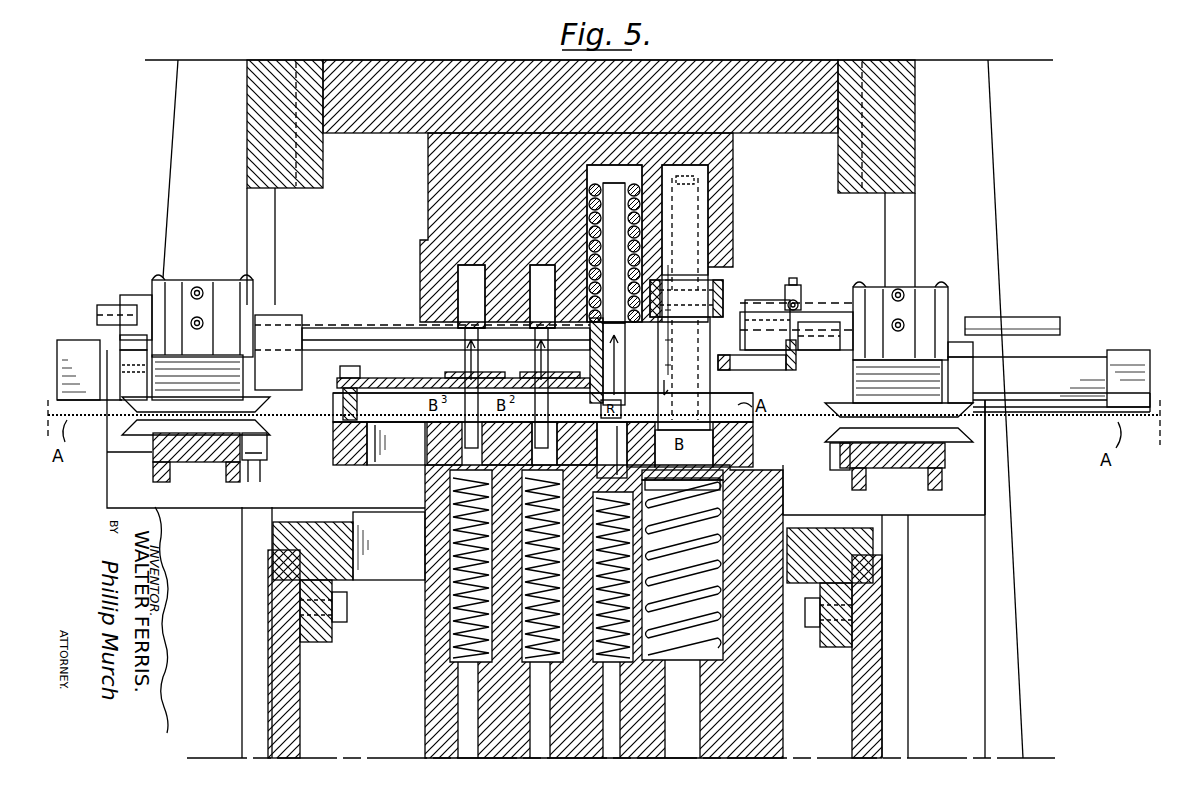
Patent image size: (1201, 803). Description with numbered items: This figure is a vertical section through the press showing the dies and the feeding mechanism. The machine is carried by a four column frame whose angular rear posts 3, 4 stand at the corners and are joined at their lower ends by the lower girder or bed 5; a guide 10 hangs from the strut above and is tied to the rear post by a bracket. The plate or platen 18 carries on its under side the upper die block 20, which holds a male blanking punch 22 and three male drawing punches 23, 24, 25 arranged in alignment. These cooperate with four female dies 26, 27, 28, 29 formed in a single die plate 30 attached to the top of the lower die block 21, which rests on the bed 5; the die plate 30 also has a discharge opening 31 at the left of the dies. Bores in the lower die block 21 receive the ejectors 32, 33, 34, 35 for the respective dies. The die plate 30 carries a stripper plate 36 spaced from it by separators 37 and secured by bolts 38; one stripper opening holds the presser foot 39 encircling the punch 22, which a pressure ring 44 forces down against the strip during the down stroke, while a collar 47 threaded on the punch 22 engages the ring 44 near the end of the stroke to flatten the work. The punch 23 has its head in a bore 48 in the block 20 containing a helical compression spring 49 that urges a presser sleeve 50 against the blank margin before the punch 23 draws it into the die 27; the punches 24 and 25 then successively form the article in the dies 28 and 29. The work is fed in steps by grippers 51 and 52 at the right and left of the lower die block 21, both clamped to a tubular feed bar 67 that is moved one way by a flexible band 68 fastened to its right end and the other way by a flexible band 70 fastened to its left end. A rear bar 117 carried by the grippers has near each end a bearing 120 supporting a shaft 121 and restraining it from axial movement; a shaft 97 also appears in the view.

The rear post 3 is at (196, 594).
The rear post 4 is at (1000, 632).
The lower girder or bed 5 is at (850, 681).
The guide 10 is at (303, 188).
The plate (platen) 18 is at (806, 150).
The upper die block 20 is at (427, 201).
The lower die block 21 is at (788, 585).
The male blanking die or punch 22 is at (685, 227).
The male drawing die or punch 23 is at (614, 243).
The male drawing die or punch 24 is at (542, 356).
The male drawing die or punch 25 is at (471, 356).
The female die 26 is at (740, 448).
The female die 27 is at (597, 441).
The female die 28 is at (532, 441).
The female die 29 is at (462, 441).
The die plate 30 is at (345, 460).
The discharge opening 31 is at (400, 460).
The ejector 32 is at (673, 456).
The ejector 33 is at (612, 450).
The ejector 34 is at (544, 443).
The ejector 35 is at (440, 478).
The stripper plate 36 is at (406, 370).
The separator 37 is at (343, 404).
The bolt 38 is at (340, 370).
The presser foot 39 is at (750, 350).
The pressure ring 44 is at (788, 306).
The collar 47 is at (722, 282).
The bore 48 is at (586, 241).
The helical compression spring 49 is at (588, 206).
The presser sleeve 50 is at (590, 364).
The gripper 51 is at (912, 455).
The gripper 52 is at (207, 456).
The tubular feed bar 67 is at (1075, 370).
The flexible band 68 is at (1150, 405).
The flexible band 70 is at (48, 398).
The shaft 97 is at (1020, 320).
The rear bar 117 is at (780, 396).
The bearing 120 is at (275, 325).
The shaft 121 is at (372, 330).